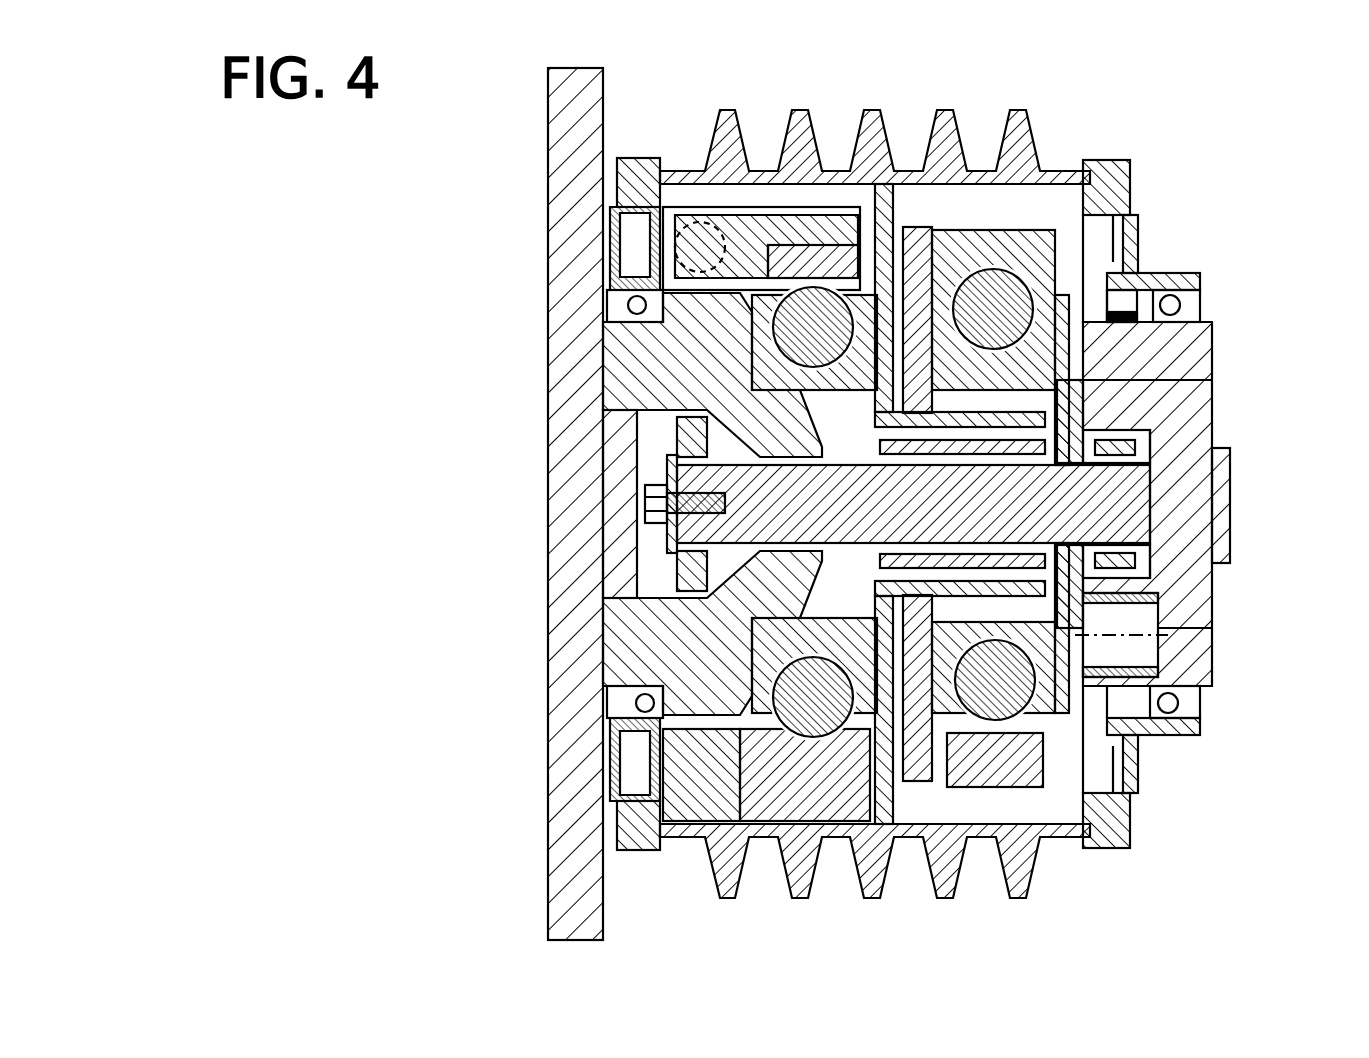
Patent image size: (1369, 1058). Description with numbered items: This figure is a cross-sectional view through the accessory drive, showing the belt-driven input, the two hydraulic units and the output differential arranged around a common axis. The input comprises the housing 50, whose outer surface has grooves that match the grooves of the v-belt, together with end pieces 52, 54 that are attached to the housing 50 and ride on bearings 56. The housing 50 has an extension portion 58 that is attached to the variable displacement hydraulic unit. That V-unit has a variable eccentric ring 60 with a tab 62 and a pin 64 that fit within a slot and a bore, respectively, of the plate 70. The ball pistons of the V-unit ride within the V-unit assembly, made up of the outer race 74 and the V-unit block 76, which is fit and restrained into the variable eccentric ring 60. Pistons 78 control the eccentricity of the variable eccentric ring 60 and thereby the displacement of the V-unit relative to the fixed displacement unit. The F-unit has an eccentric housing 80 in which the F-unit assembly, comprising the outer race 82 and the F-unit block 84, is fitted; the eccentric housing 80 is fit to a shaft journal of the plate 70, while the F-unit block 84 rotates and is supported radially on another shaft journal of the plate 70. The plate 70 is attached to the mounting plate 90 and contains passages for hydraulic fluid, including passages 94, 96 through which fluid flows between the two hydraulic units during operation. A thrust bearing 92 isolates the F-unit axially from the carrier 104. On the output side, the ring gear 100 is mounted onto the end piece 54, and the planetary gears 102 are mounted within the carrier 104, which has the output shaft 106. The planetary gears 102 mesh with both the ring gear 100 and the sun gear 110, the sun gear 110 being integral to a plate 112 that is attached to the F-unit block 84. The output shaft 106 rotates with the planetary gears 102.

The housing 50 is at (1032, 176).
The end piece 52 is at (615, 213).
The end piece 54 is at (1140, 205).
The bearings 56 is at (1178, 292).
The extension portion 58 is at (898, 195).
The variable eccentric ring 60 is at (840, 810).
The tab 62 is at (758, 225).
The pin 64 is at (700, 775).
The plate 70 is at (625, 378).
The outer race 74 is at (780, 725).
The V-unit block 76 is at (775, 540).
The pistons 78 is at (688, 240).
The eccentric housing 80 is at (920, 790).
The outer race 82 is at (990, 750).
The F-unit block 84 is at (1060, 720).
The mounting plate 90 is at (583, 110).
The thrust bearing 92 is at (1212, 563).
The passage 94 is at (1010, 398).
The passage 96 is at (1010, 522).
The ring gear 100 is at (1165, 735).
The planetary gears 102 is at (1210, 680).
The carrier 104 is at (1215, 405).
The output shaft 106 is at (715, 597).
The sun gear 110 is at (1130, 445).
The plate 112 is at (1112, 345).